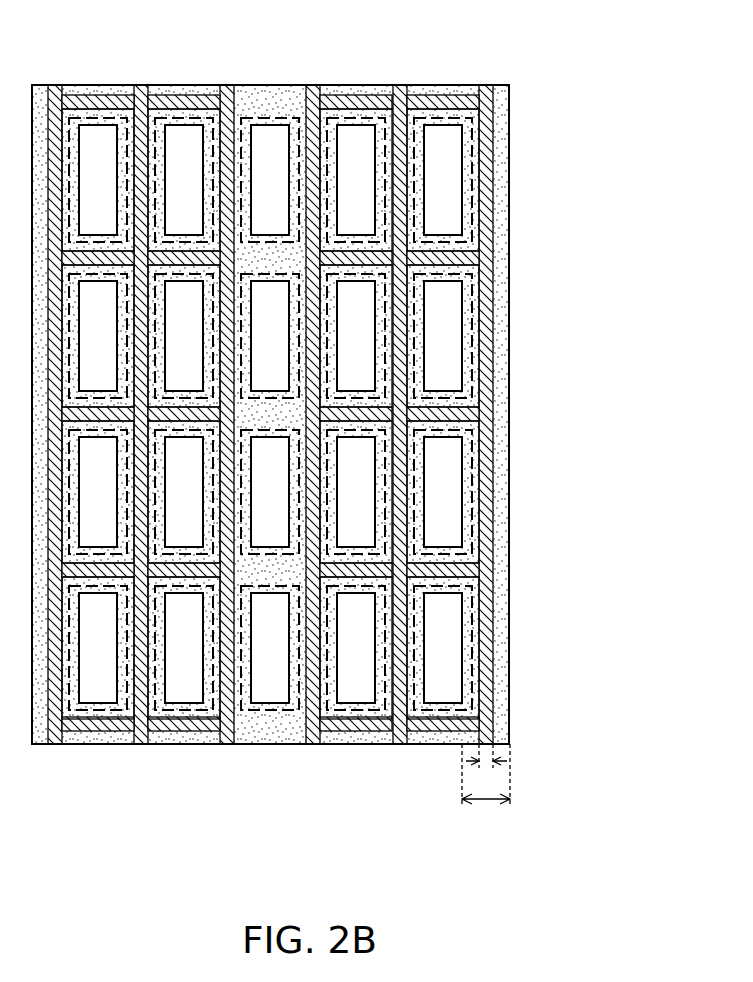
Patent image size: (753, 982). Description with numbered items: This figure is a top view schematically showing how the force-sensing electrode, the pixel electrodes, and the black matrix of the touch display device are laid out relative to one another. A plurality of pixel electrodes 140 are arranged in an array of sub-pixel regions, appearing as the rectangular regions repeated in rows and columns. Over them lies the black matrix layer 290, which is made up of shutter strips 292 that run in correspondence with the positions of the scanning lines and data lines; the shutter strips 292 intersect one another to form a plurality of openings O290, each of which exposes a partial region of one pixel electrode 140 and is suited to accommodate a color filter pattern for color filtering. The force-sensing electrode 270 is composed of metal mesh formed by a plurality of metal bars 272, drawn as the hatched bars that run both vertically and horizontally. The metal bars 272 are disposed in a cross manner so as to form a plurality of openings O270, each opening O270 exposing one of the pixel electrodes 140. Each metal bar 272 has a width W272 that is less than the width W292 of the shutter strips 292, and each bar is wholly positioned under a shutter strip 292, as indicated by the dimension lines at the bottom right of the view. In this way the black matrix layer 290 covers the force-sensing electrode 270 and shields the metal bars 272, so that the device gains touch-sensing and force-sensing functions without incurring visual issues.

The pixel electrode 140 is at (441, 117).
The force-sensing electrode 270 is at (374, 414).
The metal bar 272 is at (488, 200).
The opening O270 is at (464, 110).
The black matrix layer 290 is at (366, 414).
The shutter strip 292 is at (496, 266).
The opening O290 is at (442, 388).
The width of metal bar W272 is at (487, 766).
The width of shutter strip W292 is at (488, 796).